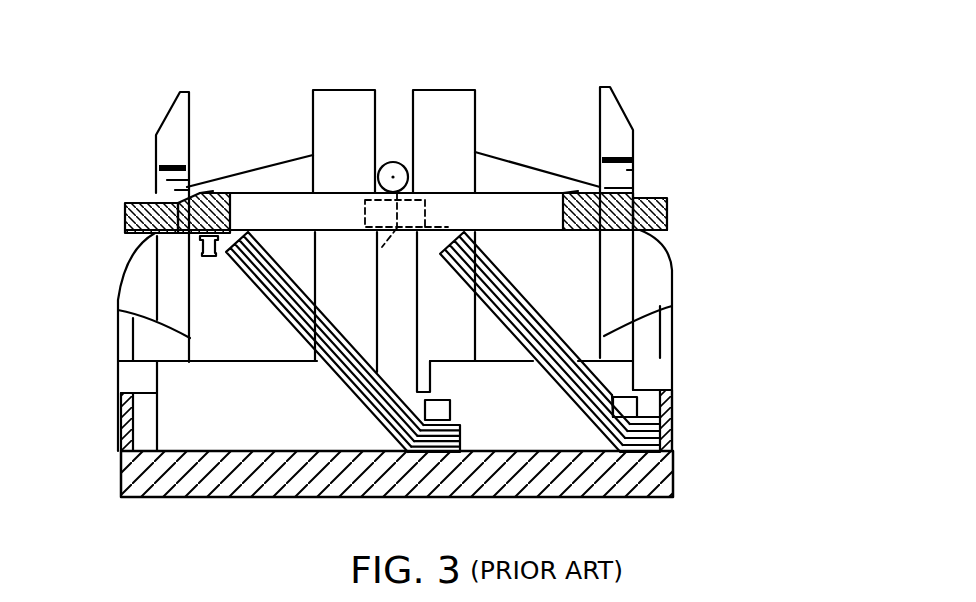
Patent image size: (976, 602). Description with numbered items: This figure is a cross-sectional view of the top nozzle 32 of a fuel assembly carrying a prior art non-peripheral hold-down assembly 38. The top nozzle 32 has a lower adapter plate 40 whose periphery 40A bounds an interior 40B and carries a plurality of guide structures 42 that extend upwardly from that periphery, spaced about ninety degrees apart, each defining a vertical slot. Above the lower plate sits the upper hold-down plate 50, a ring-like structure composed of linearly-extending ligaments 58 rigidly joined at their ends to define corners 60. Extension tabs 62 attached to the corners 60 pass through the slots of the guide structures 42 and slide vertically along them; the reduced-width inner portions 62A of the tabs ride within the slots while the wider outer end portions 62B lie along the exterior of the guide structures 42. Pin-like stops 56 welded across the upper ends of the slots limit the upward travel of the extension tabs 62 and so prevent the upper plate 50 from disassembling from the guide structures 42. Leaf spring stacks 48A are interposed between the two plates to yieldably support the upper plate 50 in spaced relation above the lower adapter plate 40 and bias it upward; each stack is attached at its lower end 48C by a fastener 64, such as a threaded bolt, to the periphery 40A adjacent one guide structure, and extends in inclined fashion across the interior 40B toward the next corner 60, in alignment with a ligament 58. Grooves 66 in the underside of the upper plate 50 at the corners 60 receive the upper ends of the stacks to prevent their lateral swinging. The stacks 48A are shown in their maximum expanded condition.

The top nozzle 32 is at (716, 224).
The non-peripheral hold-down assembly 38 is at (146, 113).
The lower adapter plate 40 is at (402, 468).
The periphery of the lower adapter plate 40A is at (677, 463).
The interior of the lower adapter plate 40B is at (225, 497).
The guide structures 42 is at (156, 150).
The leaf spring stacks 48A is at (550, 320).
The lower ends of the leaf spring stacks 48C is at (648, 416).
The upper hold-down plate 50 is at (523, 192).
The stops 56 is at (157, 182).
The ligaments 58 is at (285, 192).
The corners of the upper plate 60 is at (214, 192).
The extension tabs 62 is at (396, 231).
The inner portions of the extension tabs 62A is at (157, 231).
The outer end portions of the extension tabs 62B is at (130, 203).
The fastener 64 is at (638, 395).
The grooves 66 is at (198, 246).